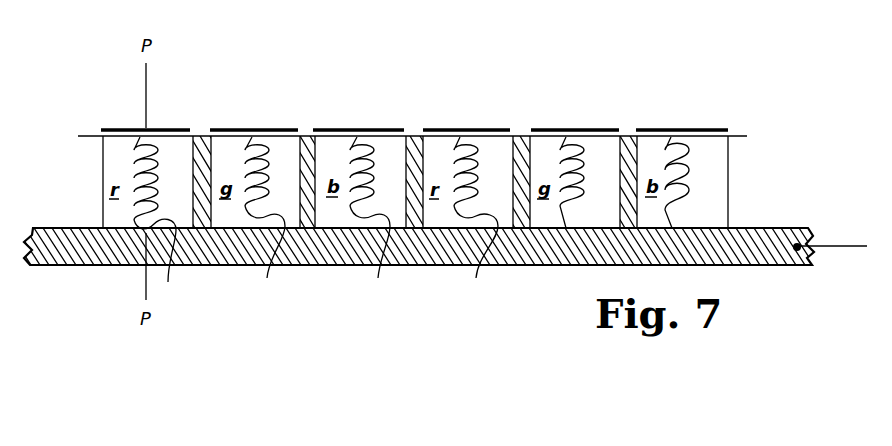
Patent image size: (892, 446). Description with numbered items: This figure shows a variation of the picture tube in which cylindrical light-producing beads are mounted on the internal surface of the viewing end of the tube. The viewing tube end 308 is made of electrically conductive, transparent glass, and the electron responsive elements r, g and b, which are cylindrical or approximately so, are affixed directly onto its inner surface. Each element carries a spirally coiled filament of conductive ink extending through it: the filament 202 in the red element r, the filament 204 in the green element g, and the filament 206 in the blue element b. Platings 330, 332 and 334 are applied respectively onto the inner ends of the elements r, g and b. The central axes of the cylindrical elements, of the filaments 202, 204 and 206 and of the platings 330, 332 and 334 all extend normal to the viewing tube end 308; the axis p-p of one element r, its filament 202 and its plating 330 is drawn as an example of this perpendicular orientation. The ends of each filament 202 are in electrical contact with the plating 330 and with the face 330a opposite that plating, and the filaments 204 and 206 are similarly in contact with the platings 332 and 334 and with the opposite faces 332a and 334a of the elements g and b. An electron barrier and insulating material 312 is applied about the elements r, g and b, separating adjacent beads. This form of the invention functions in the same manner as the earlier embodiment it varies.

The viewing tube end 308 is at (797, 265).
The electron barrier and insulating material 312 is at (200, 135).
The plating 330 is at (166, 128).
The plating 332 is at (262, 128).
The plating 334 is at (347, 128).
The spirally coiled filament 202 is at (152, 168).
The spirally coiled filament 204 is at (273, 178).
The spirally coiled filament 206 is at (380, 178).
The face 330a is at (168, 282).
The face 332a is at (267, 278).
The face 334a is at (378, 278).